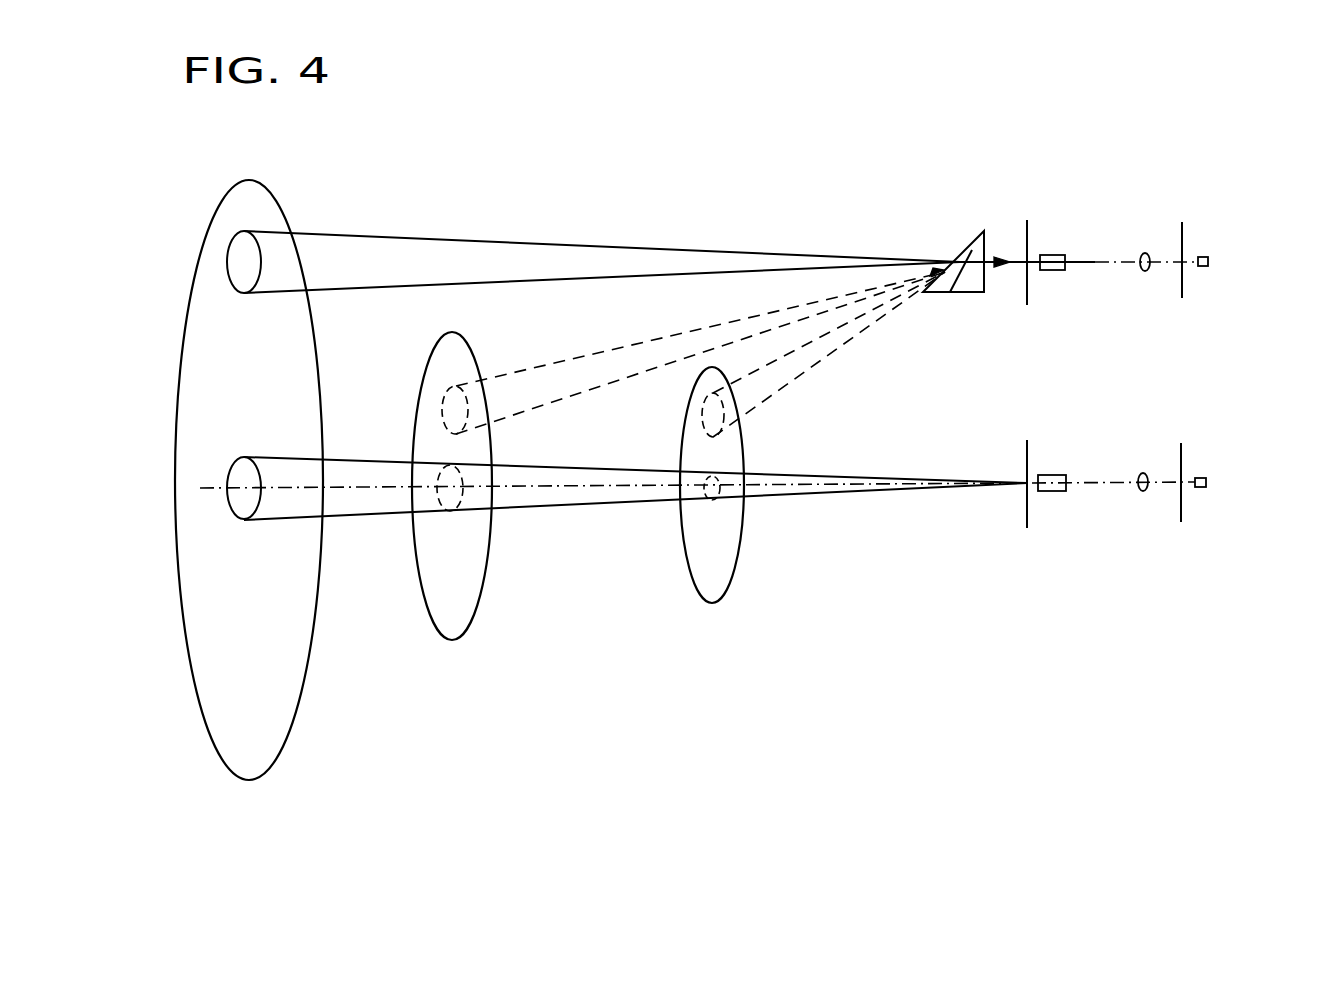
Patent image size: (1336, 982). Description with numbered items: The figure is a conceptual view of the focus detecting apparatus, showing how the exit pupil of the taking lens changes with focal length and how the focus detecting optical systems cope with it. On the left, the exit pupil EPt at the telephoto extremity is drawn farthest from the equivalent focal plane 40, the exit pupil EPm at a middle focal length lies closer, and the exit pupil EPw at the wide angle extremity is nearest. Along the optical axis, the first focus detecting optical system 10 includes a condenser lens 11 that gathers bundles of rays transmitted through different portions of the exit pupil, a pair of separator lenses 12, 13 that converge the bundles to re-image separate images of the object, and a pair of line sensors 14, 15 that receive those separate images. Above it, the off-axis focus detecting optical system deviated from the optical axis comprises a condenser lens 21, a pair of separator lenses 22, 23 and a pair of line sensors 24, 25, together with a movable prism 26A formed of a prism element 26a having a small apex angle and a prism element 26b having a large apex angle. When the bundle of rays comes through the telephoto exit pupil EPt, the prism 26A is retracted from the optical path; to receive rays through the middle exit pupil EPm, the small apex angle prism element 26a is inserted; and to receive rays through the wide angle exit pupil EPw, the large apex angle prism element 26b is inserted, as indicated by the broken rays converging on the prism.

The first focus detecting optical system 10 is at (1115, 526).
The condenser lens 11 is at (1050, 491).
The separator lens 12 is at (1132, 507).
The separator lens 13 is at (1141, 491).
The line sensor 14 is at (1213, 492).
The line sensor 15 is at (1202, 487).
The condenser lens 21 is at (1055, 270).
The separator lens 22 is at (1136, 285).
The separator lens 23 is at (1143, 271).
The line sensor 24 is at (1215, 270).
The line sensor 25 is at (1204, 266).
The movable prism 26A is at (951, 304).
The prism element of small apex angle 26a is at (968, 293).
The prism element of large apex angle 26b is at (932, 293).
The equivalent focal plane 40 is at (1024, 522).
The exit pupil at telephoto extremity EPt is at (273, 744).
The exit pupil at middle focal length EPm is at (457, 628).
The exit pupil at wide angle extremity EPw is at (719, 592).